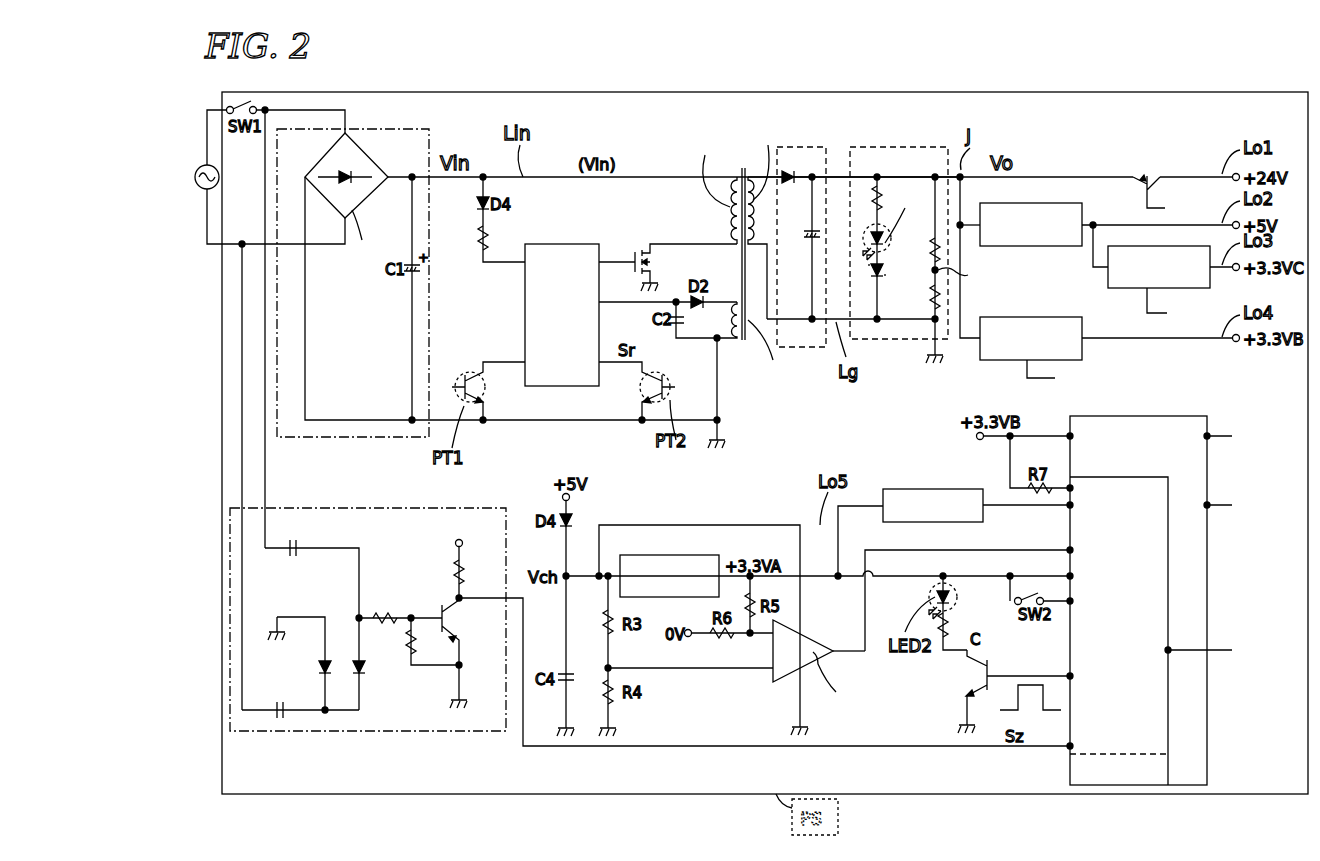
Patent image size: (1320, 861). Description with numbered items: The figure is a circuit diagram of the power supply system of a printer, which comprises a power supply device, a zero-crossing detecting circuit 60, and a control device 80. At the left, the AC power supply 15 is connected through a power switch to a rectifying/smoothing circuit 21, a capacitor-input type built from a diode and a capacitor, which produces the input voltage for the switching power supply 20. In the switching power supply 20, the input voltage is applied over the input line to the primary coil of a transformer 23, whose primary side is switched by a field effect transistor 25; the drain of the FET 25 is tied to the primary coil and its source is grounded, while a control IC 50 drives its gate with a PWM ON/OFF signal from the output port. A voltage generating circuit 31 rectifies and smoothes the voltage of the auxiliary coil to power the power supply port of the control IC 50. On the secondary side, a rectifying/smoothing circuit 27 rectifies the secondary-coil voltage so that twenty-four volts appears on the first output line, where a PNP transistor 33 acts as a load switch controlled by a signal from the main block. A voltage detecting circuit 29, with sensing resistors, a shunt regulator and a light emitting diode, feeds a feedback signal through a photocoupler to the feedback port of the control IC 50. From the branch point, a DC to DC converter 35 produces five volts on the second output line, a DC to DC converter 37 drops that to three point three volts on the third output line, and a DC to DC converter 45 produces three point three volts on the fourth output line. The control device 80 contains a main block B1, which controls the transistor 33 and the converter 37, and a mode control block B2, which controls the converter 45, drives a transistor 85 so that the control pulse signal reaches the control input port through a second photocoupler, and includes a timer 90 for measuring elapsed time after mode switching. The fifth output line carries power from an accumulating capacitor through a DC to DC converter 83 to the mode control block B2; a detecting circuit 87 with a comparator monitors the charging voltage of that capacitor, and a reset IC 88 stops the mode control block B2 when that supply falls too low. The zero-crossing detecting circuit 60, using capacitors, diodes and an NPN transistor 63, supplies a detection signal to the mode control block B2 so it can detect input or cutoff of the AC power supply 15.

The AC power supply 15 is at (200, 169).
The switching power supply 20 is at (660, 135).
The rectifying/smoothing circuit 21 is at (392, 129).
The transformer 23 is at (740, 172).
The field effect transistor (FET) 25 is at (642, 246).
The rectifying/smoothing circuit 27 is at (797, 147).
The voltage detecting circuit 29 is at (878, 147).
The voltage generating circuit 31 is at (737, 348).
The PNP transistor 33 is at (1140, 174).
The DC to DC converter 35 is at (1070, 203).
The DC to DC converter 37 is at (1113, 288).
The DC to DC converter 45 is at (985, 360).
The control IC 50 is at (560, 244).
The zero-crossing detecting circuit 60 is at (368, 667).
The NPN transistor 63 is at (440, 605).
The control device 80 is at (1181, 564).
The DC to DC converter 83 is at (703, 555).
The transistor 85 is at (972, 686).
The detecting circuit 87 is at (770, 690).
The reset IC 88 is at (916, 489).
The timer 90 is at (1160, 769).
The main block B1 is at (1168, 423).
The mode control block B2 is at (1160, 702).